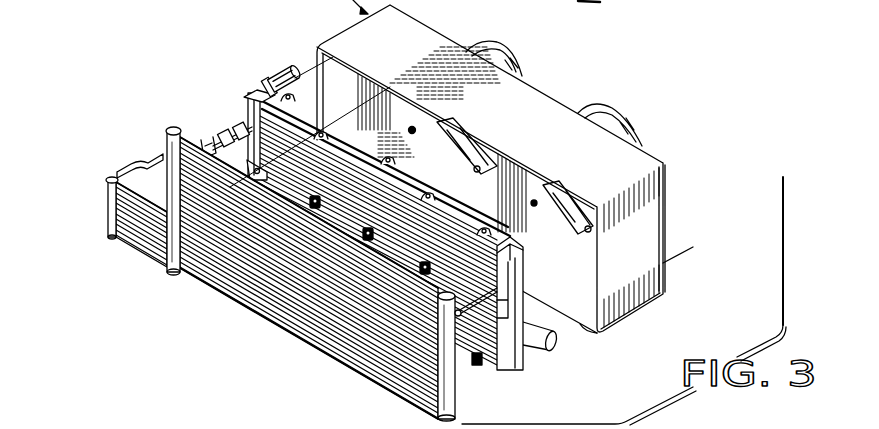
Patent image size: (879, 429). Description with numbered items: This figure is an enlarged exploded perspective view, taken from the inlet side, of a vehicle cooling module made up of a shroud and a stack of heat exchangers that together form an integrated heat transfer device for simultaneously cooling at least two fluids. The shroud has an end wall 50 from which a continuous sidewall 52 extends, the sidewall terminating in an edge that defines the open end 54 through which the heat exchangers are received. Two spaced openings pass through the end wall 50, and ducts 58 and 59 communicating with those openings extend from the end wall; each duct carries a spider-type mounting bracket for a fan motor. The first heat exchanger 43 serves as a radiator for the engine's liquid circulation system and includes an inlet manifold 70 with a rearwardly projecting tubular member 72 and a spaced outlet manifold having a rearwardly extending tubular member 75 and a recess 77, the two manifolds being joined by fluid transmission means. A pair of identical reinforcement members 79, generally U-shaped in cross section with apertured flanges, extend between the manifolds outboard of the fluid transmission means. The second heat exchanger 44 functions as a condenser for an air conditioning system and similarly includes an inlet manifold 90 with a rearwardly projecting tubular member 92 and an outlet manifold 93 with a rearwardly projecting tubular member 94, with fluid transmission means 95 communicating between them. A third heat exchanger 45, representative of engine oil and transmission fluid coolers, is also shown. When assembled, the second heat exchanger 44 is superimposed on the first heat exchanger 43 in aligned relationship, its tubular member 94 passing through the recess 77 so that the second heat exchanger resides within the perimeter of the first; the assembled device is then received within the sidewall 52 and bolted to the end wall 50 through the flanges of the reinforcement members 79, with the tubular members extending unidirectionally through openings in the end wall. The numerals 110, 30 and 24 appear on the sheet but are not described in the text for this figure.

The sidewall 52 is at (657, 212).
The end wall 50 is at (540, 207).
The duct 58 is at (640, 143).
The duct 59 is at (512, 62).
The open end 54 is at (578, 336).
The tubular member 72 is at (560, 343).
The inlet manifold 70 is at (530, 372).
The tubular member 92 is at (475, 357).
The inlet manifold 90 is at (457, 402).
The fluid transmission means 95 is at (313, 308).
The outlet manifold 93 is at (160, 170).
The third heat exchanger 45 is at (104, 195).
The second heat exchanger 44 is at (155, 133).
The first heat exchanger 43 is at (264, 68).
The tubular member 75 is at (286, 66).
The recess 77 is at (240, 126).
The tubular member 94 is at (213, 128).
The reinforcement member 79 is at (338, 118).
The line 110 is at (557, 0).
The conduit 30 is at (630, 0).
The enclosure 24 is at (775, 0).